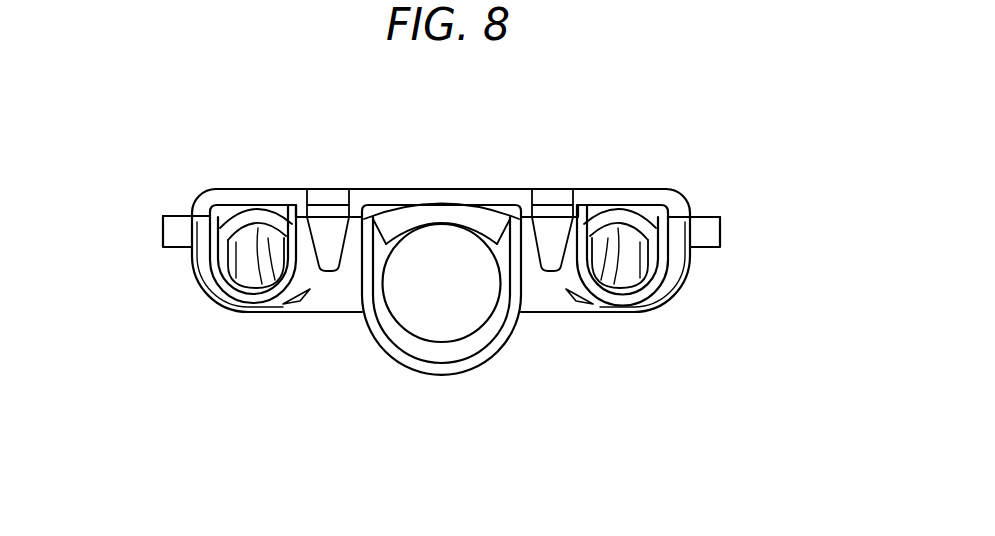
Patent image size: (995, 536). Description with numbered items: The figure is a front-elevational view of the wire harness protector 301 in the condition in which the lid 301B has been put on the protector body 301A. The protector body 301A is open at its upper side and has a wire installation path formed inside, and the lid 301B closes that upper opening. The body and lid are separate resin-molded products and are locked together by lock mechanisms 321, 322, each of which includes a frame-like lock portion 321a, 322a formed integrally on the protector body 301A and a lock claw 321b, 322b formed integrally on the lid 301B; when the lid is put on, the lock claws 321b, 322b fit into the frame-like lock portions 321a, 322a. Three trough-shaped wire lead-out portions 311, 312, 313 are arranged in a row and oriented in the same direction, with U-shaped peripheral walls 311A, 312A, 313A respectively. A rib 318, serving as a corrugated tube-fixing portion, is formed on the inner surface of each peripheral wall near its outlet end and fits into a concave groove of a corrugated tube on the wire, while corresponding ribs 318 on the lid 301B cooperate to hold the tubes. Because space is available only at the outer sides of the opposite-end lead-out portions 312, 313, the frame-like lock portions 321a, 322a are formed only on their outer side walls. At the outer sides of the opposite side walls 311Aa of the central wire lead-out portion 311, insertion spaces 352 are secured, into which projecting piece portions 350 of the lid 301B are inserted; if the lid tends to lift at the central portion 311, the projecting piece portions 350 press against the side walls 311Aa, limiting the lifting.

The wire harness protector 301 is at (694, 172).
The protector body 301A is at (262, 330).
The lid 301B is at (318, 178).
The central wire lead-out portion 311 is at (428, 392).
The U-shaped peripheral wall 311A is at (392, 354).
The side wall 311Aa is at (324, 268).
The wire lead-out portion 312 is at (203, 318).
The U-shaped peripheral wall 312A is at (232, 300).
The wire lead-out portion 313 is at (623, 330).
The U-shaped peripheral wall 313A is at (652, 302).
The rib 318 is at (254, 209).
The lock mechanism 321 is at (150, 249).
The frame-like lock portion 321a is at (163, 230).
The lock claw 321b is at (190, 207).
The lock mechanism 322 is at (740, 256).
The frame-like lock portion 322a is at (720, 230).
The lock claw 322b is at (690, 208).
The projecting piece portion 350 is at (296, 308).
The insertion space 352 is at (338, 268).